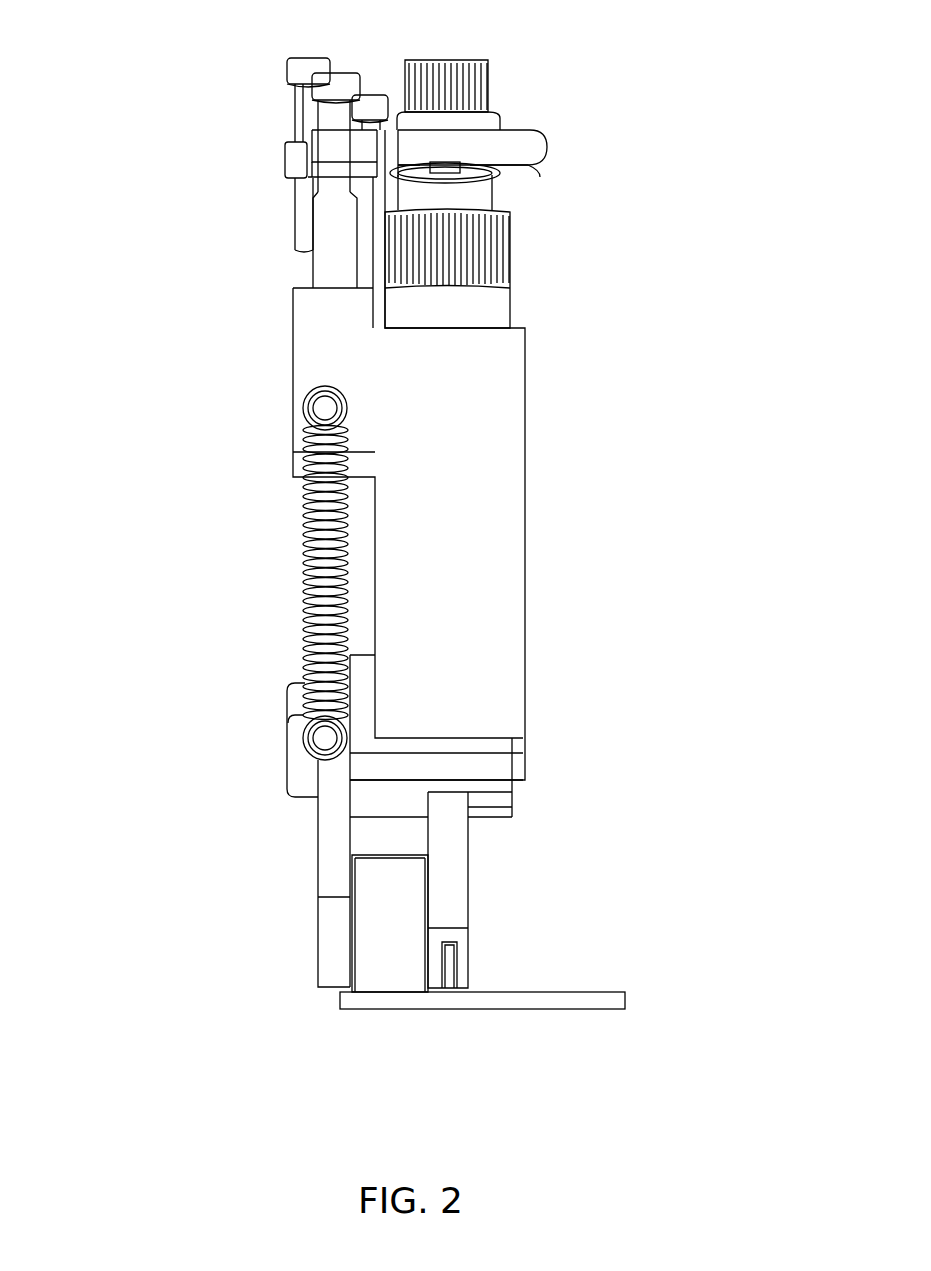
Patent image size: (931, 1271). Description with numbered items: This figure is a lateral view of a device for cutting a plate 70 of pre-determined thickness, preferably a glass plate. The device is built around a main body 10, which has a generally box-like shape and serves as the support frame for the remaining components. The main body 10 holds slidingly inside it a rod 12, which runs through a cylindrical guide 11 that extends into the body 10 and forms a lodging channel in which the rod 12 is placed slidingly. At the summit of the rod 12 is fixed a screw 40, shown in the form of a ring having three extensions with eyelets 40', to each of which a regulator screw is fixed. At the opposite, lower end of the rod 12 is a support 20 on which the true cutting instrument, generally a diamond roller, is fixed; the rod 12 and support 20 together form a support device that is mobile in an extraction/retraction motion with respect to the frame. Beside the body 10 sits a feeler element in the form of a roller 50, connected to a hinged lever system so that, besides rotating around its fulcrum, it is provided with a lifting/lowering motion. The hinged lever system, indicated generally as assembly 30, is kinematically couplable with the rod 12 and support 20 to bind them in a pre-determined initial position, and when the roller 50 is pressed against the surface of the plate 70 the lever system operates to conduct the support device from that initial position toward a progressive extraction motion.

The main body 10 is at (492, 540).
The cylindrical guide 11 is at (492, 318).
The rod 12 is at (490, 203).
The support 20 is at (442, 897).
The holder assembly 30 is at (275, 322).
The screw 40 is at (500, 164).
The eyelets 40' is at (250, 154).
The roller 50 is at (337, 929).
The plate 70 is at (563, 1000).